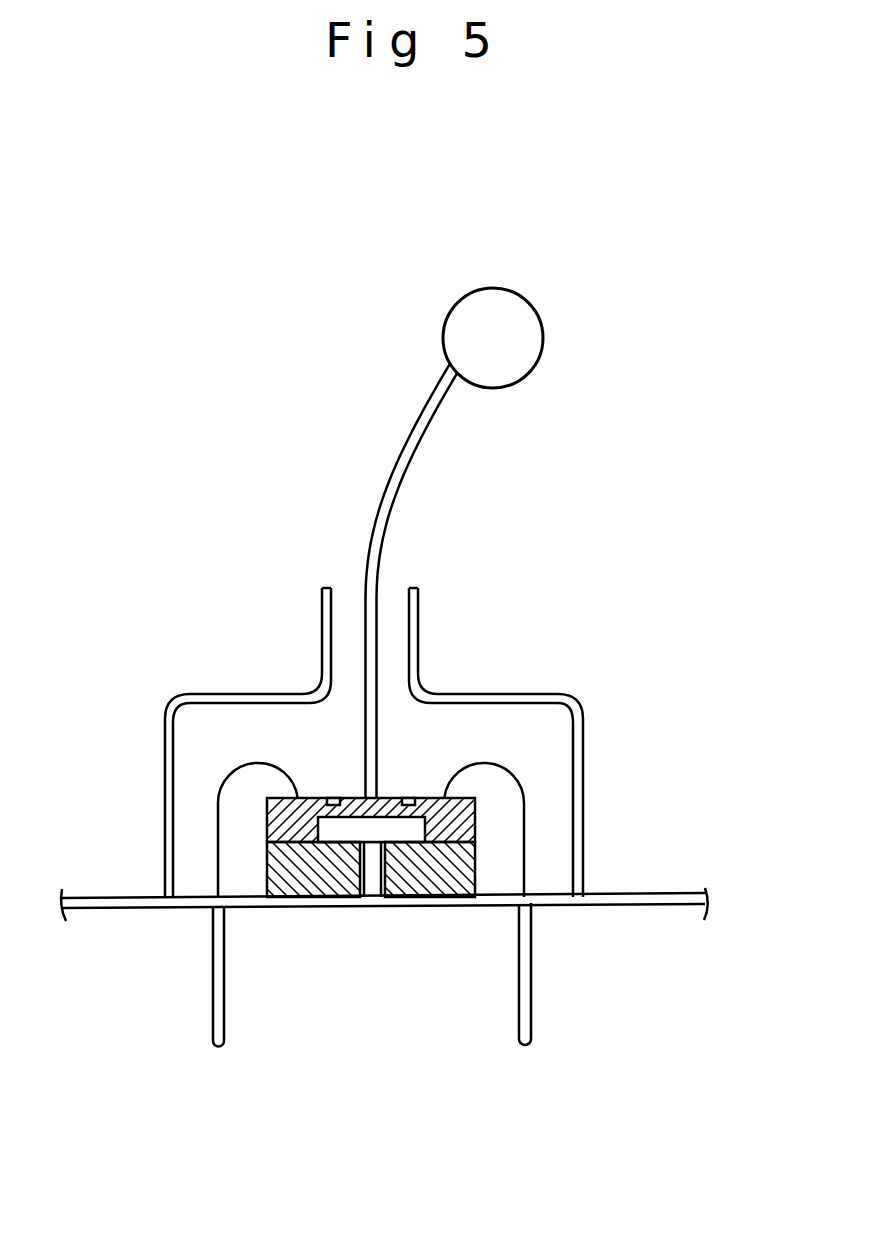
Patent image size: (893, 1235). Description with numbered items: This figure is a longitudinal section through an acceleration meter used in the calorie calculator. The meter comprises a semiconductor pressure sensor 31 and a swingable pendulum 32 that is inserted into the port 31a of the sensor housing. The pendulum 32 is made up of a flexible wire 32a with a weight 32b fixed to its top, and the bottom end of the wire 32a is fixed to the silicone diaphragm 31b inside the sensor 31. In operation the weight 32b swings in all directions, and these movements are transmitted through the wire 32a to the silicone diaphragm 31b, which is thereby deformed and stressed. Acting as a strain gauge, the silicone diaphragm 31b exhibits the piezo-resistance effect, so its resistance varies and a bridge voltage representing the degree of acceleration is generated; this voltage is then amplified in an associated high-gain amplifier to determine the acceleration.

The semiconductor pressure sensor 31 is at (672, 645).
The port 31a is at (321, 630).
The silicone diaphragm 31b is at (388, 797).
The swingable pendulum 32 is at (385, 396).
The flexible wire 32a is at (410, 455).
The weight 32b is at (541, 319).